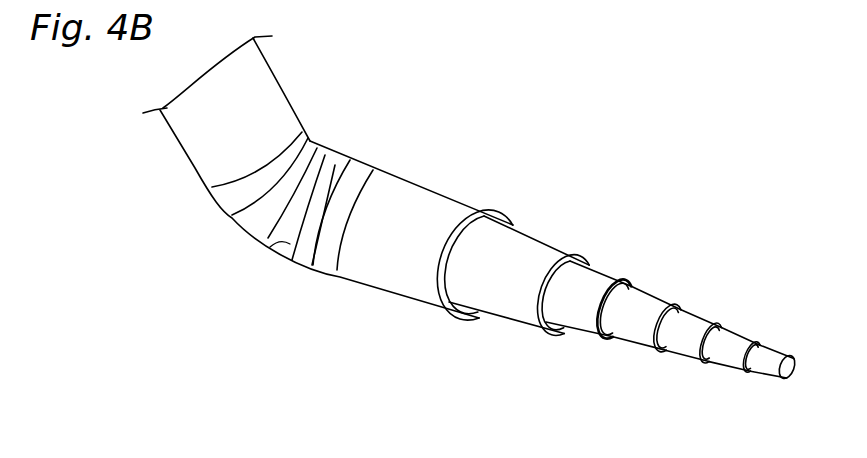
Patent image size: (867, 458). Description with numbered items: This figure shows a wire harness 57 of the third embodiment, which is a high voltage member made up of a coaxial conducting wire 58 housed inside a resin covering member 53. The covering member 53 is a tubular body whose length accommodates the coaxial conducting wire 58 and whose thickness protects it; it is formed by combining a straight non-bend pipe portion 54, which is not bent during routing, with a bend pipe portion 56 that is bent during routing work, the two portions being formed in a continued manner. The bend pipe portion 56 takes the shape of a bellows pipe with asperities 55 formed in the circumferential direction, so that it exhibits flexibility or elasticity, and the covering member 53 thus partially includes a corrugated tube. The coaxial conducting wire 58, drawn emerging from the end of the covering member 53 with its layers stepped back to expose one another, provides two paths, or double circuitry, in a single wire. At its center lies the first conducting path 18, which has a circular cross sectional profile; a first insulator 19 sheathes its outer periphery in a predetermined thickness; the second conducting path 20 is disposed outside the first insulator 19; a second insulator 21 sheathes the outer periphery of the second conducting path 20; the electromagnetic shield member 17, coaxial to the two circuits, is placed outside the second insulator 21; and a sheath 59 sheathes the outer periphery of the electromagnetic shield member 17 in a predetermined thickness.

The electromagnetic shield member 17 is at (592, 320).
The first conducting path 18 is at (770, 367).
The first insulator 19 is at (733, 357).
The second conducting path 20 is at (690, 348).
The second insulator 21 is at (635, 332).
The covering member 53 is at (443, 207).
The non-bend pipe portion 54 is at (212, 133).
The asperities 55 is at (278, 243).
The bend pipe portion 56 is at (243, 212).
The wire harness 57 is at (657, 210).
The coaxial conducting wire 58 is at (697, 293).
The sheath 59 is at (505, 312).